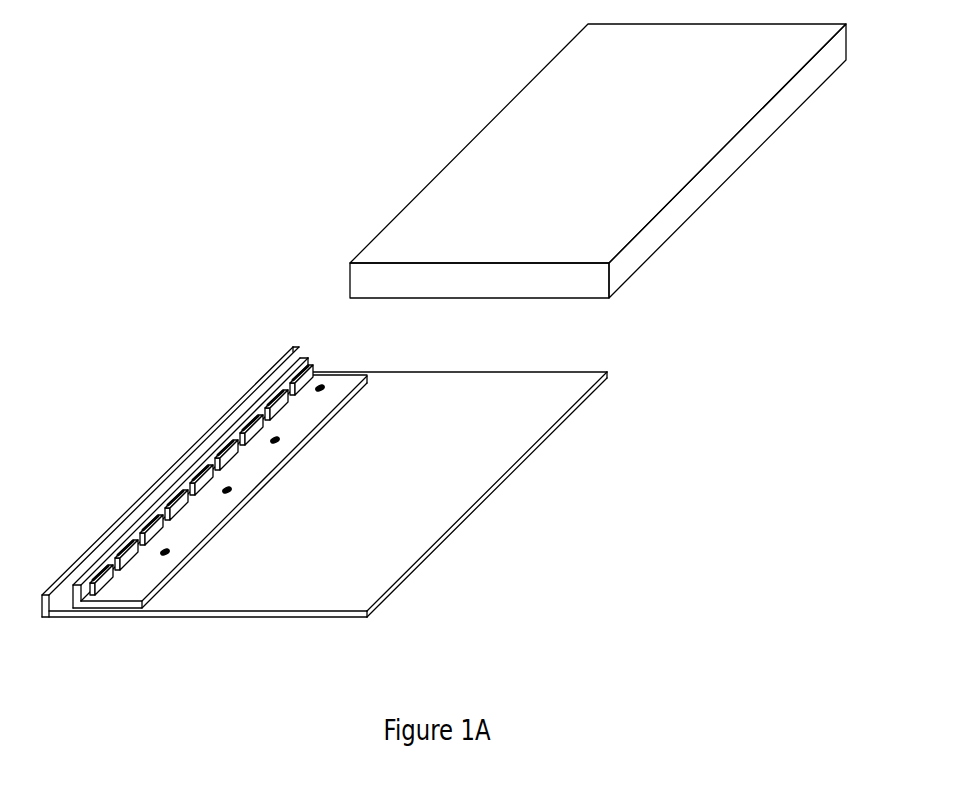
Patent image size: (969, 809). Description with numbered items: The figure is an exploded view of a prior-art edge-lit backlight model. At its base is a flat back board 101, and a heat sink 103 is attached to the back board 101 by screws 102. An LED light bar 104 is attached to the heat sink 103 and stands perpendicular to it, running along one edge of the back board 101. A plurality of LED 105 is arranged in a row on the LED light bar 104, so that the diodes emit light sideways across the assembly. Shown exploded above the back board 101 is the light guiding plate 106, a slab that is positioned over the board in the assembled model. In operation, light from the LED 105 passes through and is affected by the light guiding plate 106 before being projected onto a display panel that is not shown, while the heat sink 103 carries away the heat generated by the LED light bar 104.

The back board 101 is at (375, 562).
The screws 102 is at (225, 487).
The heat sink 103 is at (135, 590).
The LED light bar 104 is at (160, 517).
The LED 105 is at (127, 552).
The light guiding plate 106 is at (643, 163).